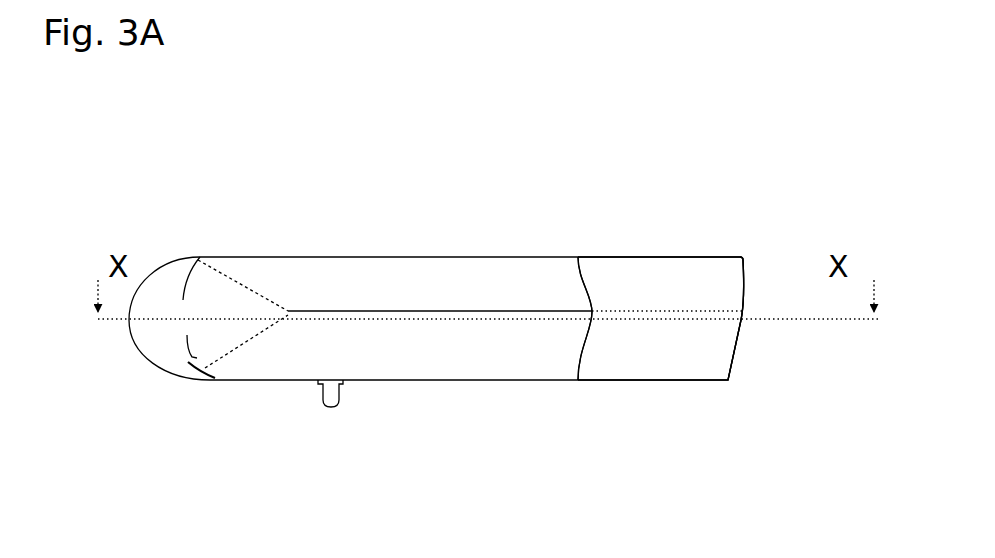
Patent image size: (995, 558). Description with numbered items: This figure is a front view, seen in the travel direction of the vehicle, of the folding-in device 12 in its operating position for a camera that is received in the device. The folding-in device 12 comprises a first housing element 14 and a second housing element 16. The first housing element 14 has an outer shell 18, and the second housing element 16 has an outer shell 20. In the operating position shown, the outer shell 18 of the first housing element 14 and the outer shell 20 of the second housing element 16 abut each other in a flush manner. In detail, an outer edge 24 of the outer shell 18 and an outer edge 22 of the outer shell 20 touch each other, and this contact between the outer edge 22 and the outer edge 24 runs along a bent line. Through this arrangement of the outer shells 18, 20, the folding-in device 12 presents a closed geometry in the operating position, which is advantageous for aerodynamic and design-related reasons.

The folding-in device 12 is at (511, 153).
The first housing element 14 is at (282, 240).
The second housing element 16 is at (659, 229).
The outer shell 18 is at (358, 346).
The outer shell 20 is at (712, 355).
The outer edge 22 is at (577, 386).
The outer edge 24 is at (574, 394).